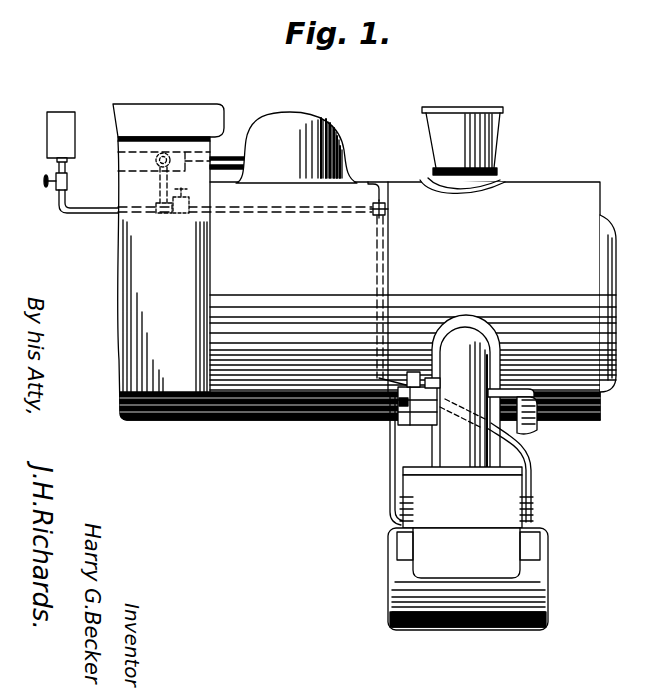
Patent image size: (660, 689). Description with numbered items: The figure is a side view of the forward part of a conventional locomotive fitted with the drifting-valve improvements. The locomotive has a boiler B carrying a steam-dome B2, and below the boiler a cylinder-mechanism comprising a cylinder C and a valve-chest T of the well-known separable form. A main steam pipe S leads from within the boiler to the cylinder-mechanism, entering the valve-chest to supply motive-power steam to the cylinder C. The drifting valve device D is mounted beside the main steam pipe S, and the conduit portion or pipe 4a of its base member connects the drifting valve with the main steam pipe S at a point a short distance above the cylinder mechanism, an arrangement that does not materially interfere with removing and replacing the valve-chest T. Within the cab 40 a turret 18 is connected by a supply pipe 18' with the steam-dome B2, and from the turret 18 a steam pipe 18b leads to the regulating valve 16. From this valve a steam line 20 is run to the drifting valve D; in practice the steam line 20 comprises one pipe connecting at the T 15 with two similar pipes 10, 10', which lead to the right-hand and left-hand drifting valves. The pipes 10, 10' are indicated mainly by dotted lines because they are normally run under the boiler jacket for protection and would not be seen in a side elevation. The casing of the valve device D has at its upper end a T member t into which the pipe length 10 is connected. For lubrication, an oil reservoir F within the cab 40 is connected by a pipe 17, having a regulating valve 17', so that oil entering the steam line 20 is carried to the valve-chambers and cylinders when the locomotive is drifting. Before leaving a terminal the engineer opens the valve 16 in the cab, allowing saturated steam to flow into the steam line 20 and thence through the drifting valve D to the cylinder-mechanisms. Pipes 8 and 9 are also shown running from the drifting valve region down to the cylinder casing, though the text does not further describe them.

The oil reservoir F is at (66, 112).
The cab 40 is at (183, 113).
The steam pipe 18b is at (157, 178).
The supply pipe 18' is at (235, 135).
The steam-dome B2 is at (332, 131).
The pipe 10' is at (370, 175).
The boiler B is at (536, 188).
The turret 18 is at (107, 188).
The T 15 is at (389, 212).
The steam line 20 is at (320, 216).
The pipe 10 is at (374, 300).
The regulating valve 17' is at (45, 204).
The pipe 17 is at (88, 226).
The regulating valve 16 is at (182, 216).
The main steam pipe S is at (468, 448).
The T member t is at (435, 392).
The drifting valve D is at (413, 428).
The pipe 8 is at (386, 478).
The pipe 9 is at (533, 482).
The conduit portion or pipe 4a is at (432, 468).
The cylinder C is at (541, 570).
The valve-chest T is at (515, 514).